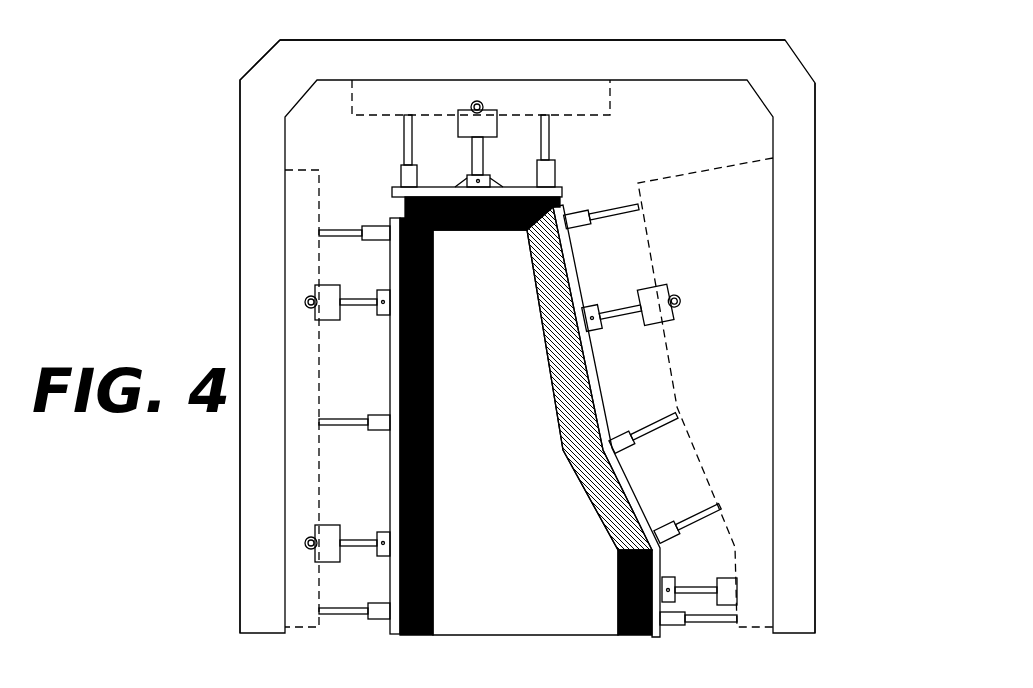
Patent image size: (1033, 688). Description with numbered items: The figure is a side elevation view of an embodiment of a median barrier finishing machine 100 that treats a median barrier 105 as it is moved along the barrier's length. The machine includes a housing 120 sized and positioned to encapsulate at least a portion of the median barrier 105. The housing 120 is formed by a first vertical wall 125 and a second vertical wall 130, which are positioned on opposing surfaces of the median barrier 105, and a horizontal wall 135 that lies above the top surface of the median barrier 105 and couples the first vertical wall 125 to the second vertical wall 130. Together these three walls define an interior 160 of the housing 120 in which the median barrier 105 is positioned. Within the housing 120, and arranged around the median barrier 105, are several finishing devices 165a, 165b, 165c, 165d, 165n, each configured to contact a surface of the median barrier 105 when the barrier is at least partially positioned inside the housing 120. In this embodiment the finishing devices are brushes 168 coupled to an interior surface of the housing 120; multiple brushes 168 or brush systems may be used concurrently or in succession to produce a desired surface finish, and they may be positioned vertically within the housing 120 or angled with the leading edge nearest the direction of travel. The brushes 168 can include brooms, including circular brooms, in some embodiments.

The median barrier finishing machine 100 is at (850, 581).
The median barrier 105 is at (521, 443).
The housing 120 is at (816, 157).
The first vertical wall 125 is at (240, 273).
The second vertical wall 130 is at (815, 275).
The horizontal wall 135 is at (655, 40).
The interior 160 is at (706, 146).
The finishing device 165a is at (393, 192).
The finishing device 165b is at (390, 352).
The finishing device 165c is at (390, 497).
The finishing device 165d is at (598, 375).
The finishing device 165n is at (660, 567).
The brush 168 is at (627, 634).